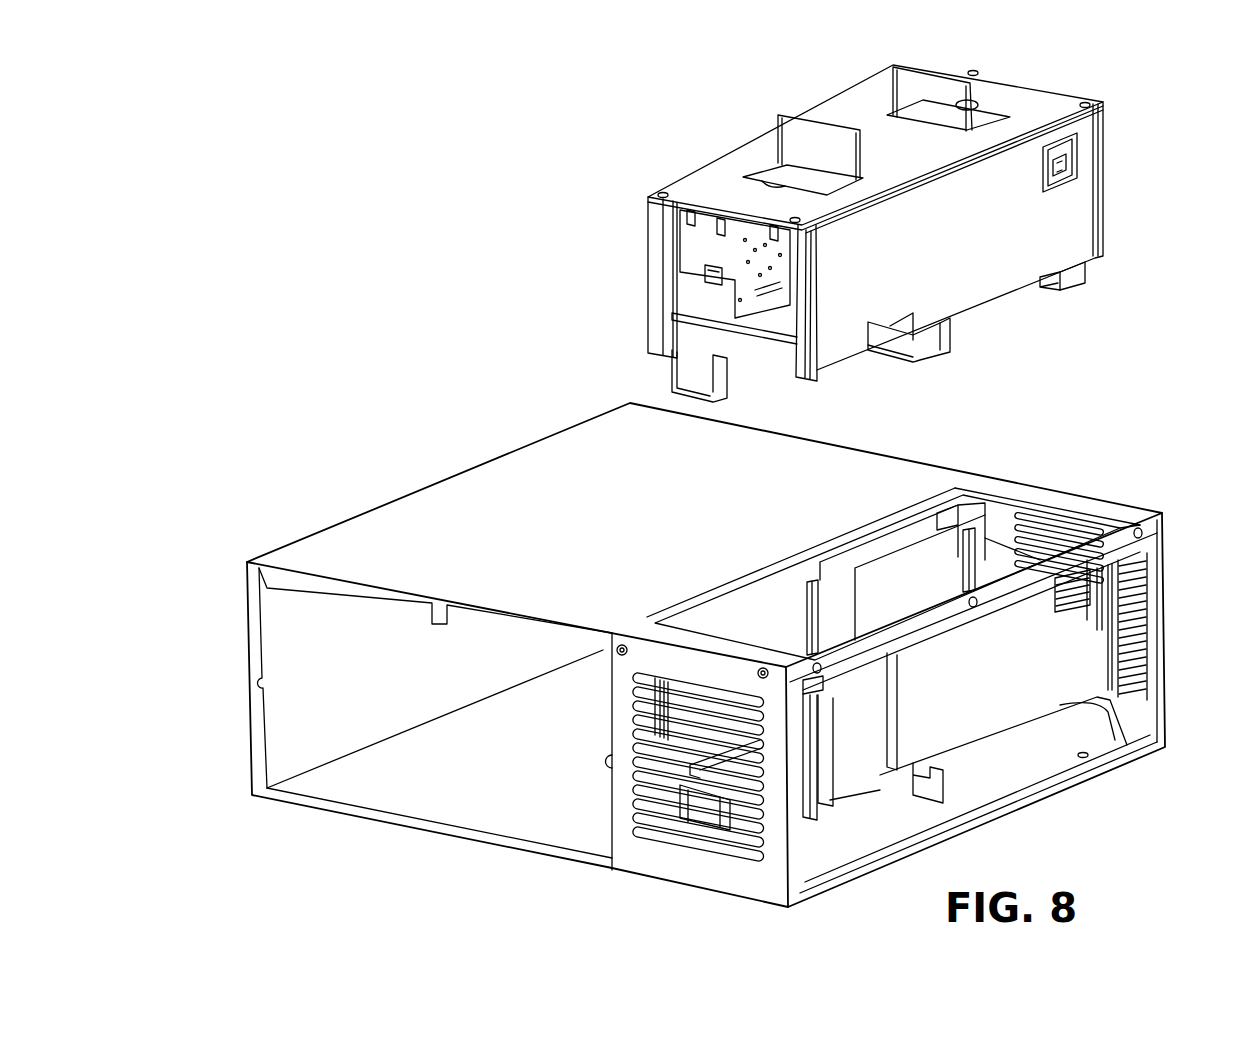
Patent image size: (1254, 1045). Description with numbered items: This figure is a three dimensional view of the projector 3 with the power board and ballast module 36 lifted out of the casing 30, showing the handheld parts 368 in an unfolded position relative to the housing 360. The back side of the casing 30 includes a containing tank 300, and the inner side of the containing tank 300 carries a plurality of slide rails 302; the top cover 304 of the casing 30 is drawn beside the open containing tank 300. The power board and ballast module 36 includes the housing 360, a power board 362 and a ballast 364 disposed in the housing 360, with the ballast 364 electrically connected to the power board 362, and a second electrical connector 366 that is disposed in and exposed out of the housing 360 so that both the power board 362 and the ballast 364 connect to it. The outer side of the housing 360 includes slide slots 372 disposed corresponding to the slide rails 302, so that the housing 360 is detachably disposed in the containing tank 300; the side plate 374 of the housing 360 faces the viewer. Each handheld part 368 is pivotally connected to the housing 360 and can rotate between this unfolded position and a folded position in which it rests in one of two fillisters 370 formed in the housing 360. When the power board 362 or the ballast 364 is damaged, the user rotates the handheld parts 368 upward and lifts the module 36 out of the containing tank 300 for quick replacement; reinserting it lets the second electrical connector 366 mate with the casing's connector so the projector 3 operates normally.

The projector 3 is at (478, 138).
The casing 30 is at (328, 530).
The power board and ballast module 36 is at (1063, 89).
The containing tank 300 is at (1003, 520).
The slide rails 302 is at (806, 623).
The top cover 304 is at (453, 500).
The housing 360 is at (647, 212).
The power board 362 is at (683, 378).
The ballast 364 is at (733, 250).
The second electrical connector 366 is at (708, 350).
The handheld part 368 is at (778, 118).
The fillisters 370 is at (758, 167).
The slide slots 372 is at (1106, 211).
The side plate 374 is at (897, 147).